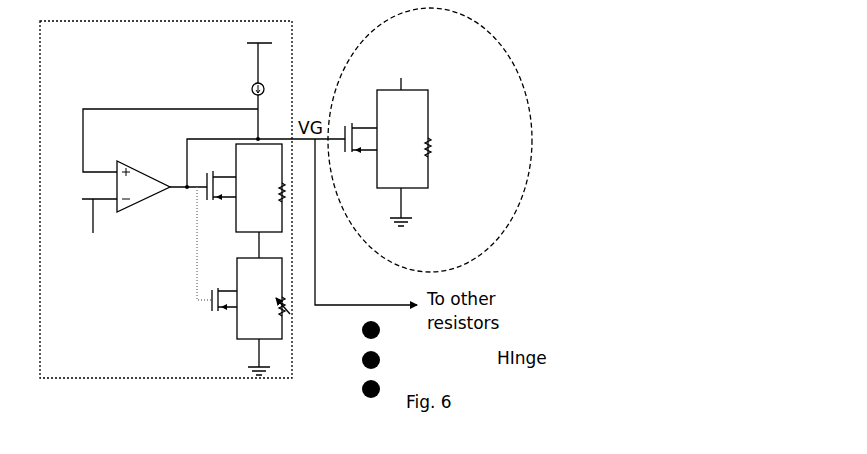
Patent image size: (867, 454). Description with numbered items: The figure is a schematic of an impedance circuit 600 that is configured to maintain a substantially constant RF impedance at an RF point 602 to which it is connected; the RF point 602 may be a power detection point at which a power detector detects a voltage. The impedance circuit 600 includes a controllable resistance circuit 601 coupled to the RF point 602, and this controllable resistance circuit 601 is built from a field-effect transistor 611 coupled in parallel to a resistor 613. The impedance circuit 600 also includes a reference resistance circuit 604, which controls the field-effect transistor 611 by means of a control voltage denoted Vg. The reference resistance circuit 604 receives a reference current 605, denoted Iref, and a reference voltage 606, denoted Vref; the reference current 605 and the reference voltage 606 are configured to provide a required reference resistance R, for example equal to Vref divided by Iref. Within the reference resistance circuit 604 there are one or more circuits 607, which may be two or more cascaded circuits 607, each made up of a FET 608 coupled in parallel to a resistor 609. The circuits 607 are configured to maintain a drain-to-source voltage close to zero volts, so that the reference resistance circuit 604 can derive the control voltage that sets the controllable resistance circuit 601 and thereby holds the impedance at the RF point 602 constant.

The impedance circuit 600 is at (650, 353).
The controllable resistance circuit 601 is at (533, 118).
The RF point 602 is at (403, 88).
The reference resistance circuit 604 is at (103, 378).
The reference current 605 is at (257, 68).
The reference voltage 606 is at (160, 176).
The circuit 607 is at (228, 358).
The FET 608 is at (212, 303).
The resistor 609 is at (290, 314).
The field-effect transistor 611 is at (347, 122).
The resistor 613 is at (430, 148).